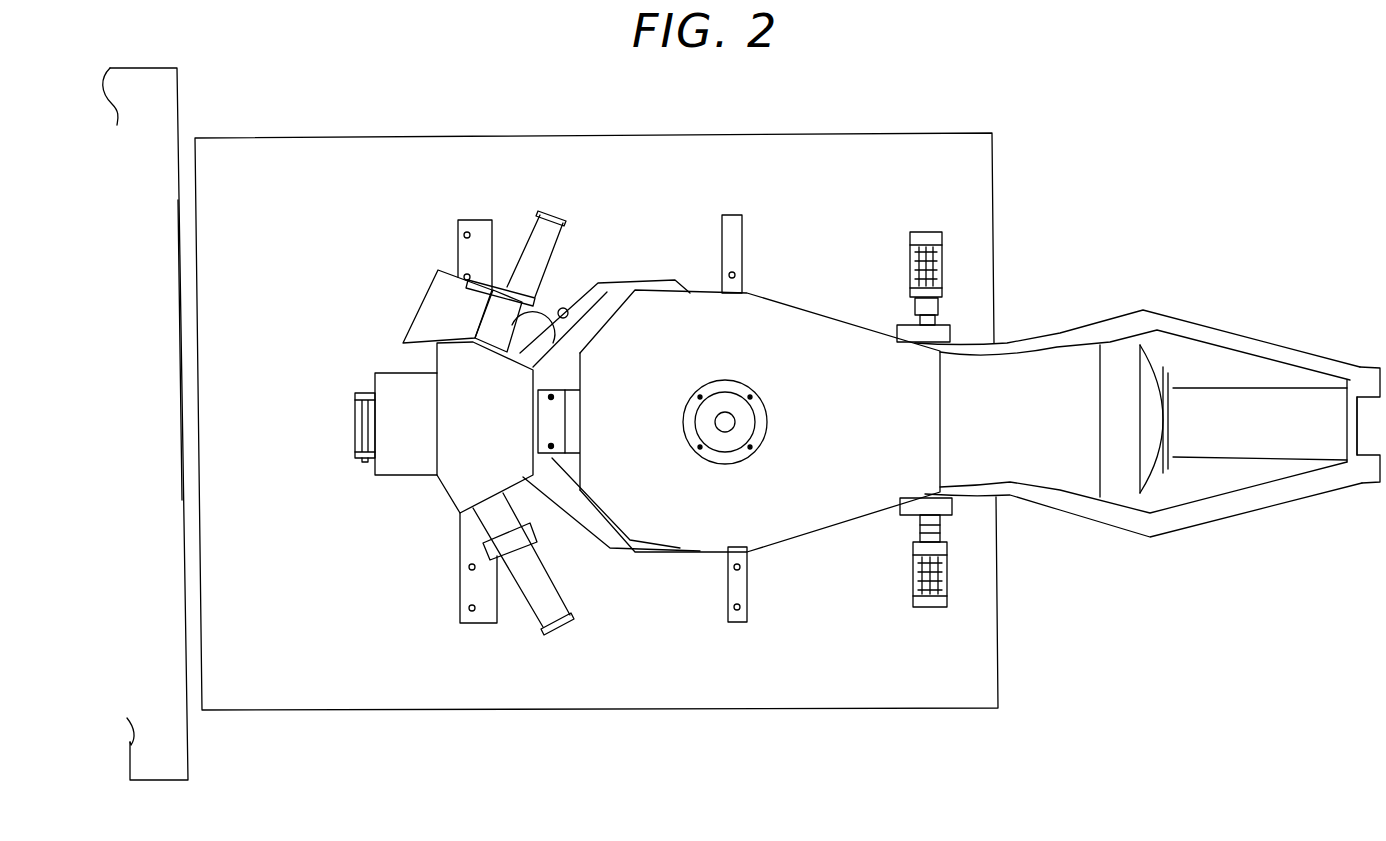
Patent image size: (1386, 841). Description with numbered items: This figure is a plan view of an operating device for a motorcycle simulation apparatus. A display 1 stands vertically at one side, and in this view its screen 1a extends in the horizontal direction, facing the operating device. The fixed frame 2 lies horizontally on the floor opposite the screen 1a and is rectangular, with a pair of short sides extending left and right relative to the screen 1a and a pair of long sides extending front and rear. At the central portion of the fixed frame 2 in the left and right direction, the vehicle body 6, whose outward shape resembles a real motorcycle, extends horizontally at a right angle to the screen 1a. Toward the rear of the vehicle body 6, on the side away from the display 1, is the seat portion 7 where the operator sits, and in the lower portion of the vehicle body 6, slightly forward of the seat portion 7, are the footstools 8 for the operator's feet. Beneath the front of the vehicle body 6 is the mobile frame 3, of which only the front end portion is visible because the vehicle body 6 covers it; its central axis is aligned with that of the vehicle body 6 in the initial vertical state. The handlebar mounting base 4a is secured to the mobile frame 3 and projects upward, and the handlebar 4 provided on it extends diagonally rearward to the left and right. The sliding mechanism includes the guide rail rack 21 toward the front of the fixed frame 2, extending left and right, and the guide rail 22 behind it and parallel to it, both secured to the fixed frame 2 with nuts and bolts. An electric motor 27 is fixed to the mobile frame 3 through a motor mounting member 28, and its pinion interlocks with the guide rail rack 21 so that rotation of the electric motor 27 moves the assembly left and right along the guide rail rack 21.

The display 1 is at (166, 103).
The screen 1a is at (185, 351).
The fixed frame 2 is at (778, 160).
The mobile frame 3 is at (355, 435).
The handlebar 4 is at (535, 232).
The handlebar mounting base 4a is at (390, 380).
The vehicle body 6 is at (785, 322).
The seat portion 7 is at (1027, 370).
The footstools 8 is at (913, 570).
The guide rail rack 21 is at (463, 594).
The guide rail 22 is at (728, 597).
The electric motor 27 is at (523, 333).
The motor mounting member 28 is at (563, 303).